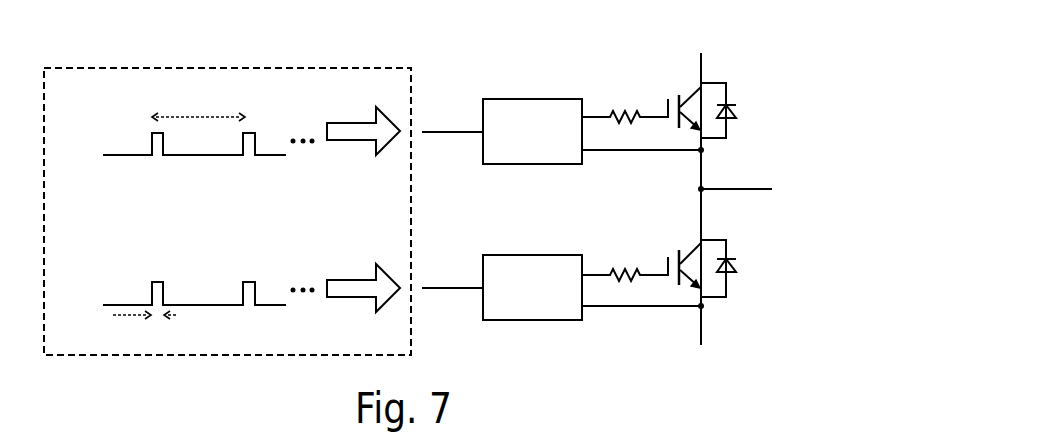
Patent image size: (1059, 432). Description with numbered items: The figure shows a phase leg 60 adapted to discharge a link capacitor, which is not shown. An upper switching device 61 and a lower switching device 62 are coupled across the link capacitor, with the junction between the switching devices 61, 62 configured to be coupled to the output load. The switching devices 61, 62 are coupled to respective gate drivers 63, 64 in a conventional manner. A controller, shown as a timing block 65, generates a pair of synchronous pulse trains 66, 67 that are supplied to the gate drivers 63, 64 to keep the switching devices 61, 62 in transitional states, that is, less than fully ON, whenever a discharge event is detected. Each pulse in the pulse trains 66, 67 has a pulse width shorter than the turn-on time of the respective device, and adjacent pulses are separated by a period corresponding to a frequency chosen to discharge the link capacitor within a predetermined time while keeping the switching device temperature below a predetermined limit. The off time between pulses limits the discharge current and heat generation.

The phase leg 60 is at (677, 175).
The upper switching device 61 is at (697, 94).
The lower switching device 62 is at (697, 250).
The gate driver 63 is at (521, 99).
The gate driver 64 is at (527, 255).
The timing block 65 is at (200, 357).
The synchronous pulse train 66 is at (109, 161).
The synchronous pulse train 67 is at (112, 318).